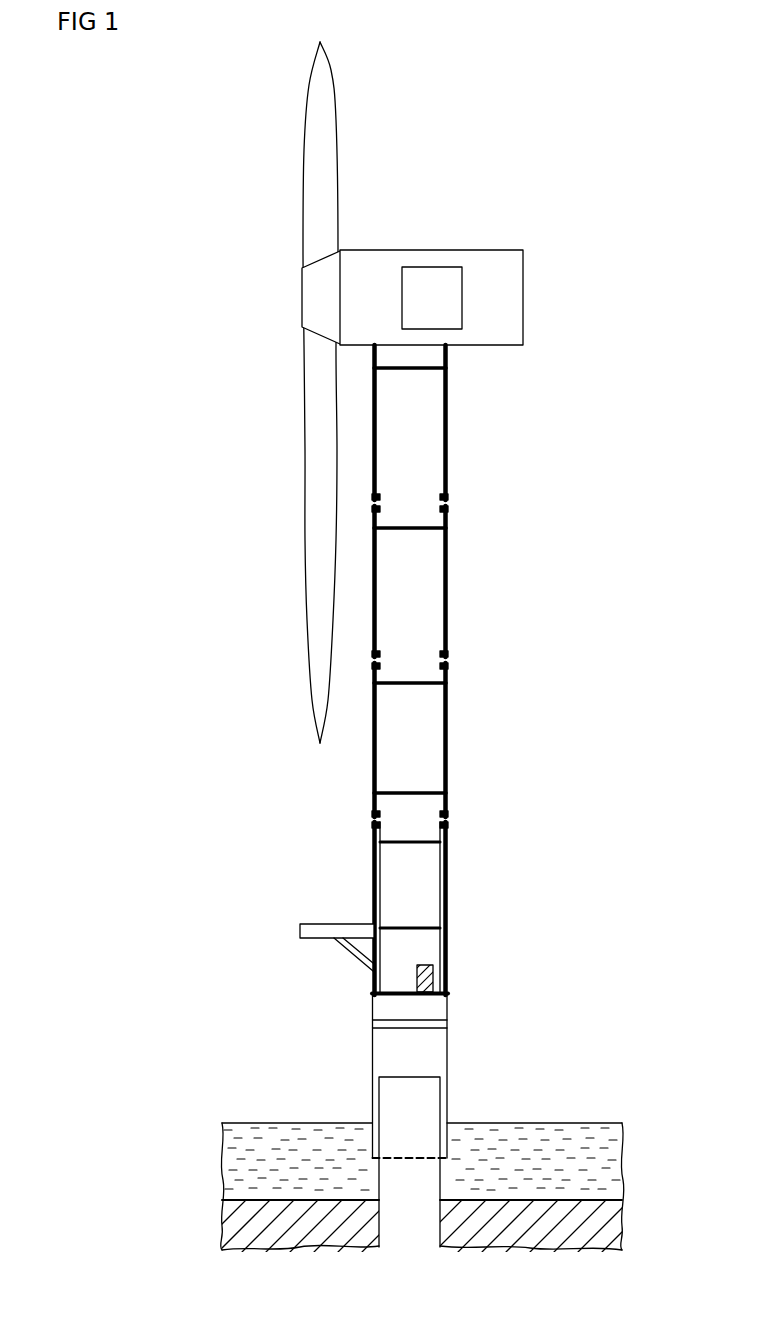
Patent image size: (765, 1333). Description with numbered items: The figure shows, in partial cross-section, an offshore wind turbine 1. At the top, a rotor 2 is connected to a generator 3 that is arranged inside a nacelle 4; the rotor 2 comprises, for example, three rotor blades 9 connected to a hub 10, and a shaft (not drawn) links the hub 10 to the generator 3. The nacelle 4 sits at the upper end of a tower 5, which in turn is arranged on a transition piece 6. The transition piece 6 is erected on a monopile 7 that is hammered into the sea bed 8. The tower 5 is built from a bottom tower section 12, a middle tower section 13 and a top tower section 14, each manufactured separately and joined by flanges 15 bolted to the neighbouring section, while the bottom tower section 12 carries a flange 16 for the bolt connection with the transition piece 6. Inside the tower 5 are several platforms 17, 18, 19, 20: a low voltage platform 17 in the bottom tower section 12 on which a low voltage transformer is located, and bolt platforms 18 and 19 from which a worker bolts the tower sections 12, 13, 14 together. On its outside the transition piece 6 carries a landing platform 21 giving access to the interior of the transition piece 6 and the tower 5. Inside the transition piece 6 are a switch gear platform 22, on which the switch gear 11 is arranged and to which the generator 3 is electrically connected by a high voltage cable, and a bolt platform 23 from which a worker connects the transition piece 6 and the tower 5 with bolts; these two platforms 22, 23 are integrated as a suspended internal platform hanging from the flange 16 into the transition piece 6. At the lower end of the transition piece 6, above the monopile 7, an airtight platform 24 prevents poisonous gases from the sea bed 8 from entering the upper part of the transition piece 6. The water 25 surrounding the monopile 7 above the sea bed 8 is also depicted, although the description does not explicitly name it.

The wind turbine 1 is at (556, 150).
The rotor 2 is at (278, 268).
The generator 3 is at (430, 286).
The nacelle 4 is at (492, 250).
The tower 5 is at (580, 415).
The transition piece 6 is at (447, 897).
The monopile 7 is at (440, 1097).
The sea bed 8 is at (605, 1227).
The rotor blades 9 is at (313, 511).
The hub 10 is at (313, 301).
The switch gear 11 is at (433, 977).
The bottom tower section 12 is at (447, 735).
The middle tower section 13 is at (447, 595).
The top tower section 14 is at (447, 433).
The flanges 15 is at (447, 488).
The flange 16 is at (447, 803).
The low voltage platform 17 is at (428, 790).
The bolt platform 18 is at (428, 687).
The bolt platform 19 is at (428, 532).
The platform 20 is at (428, 371).
The landing platform 21 is at (331, 923).
The switch gear platform 22 is at (428, 996).
The bolt platform 23 is at (418, 843).
The airtight platform 24 is at (438, 1023).
The water 25 is at (620, 1167).